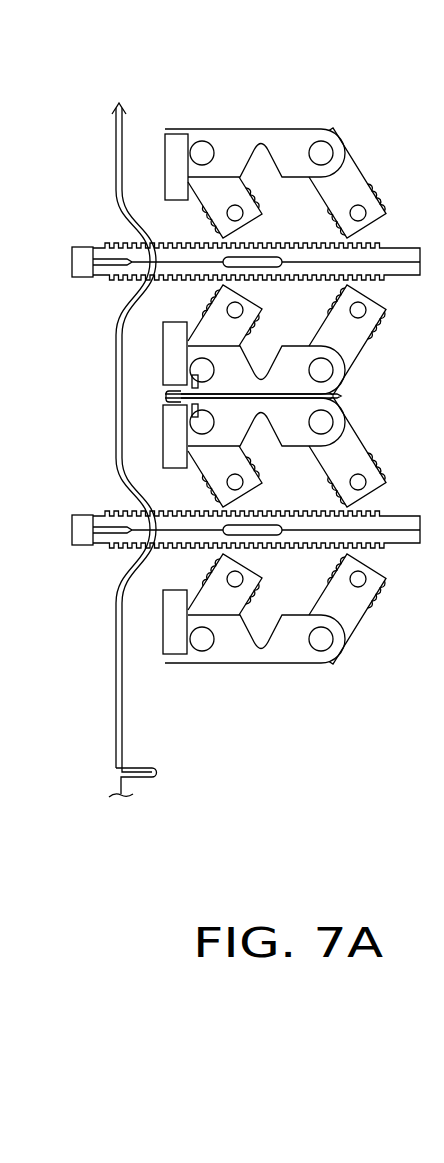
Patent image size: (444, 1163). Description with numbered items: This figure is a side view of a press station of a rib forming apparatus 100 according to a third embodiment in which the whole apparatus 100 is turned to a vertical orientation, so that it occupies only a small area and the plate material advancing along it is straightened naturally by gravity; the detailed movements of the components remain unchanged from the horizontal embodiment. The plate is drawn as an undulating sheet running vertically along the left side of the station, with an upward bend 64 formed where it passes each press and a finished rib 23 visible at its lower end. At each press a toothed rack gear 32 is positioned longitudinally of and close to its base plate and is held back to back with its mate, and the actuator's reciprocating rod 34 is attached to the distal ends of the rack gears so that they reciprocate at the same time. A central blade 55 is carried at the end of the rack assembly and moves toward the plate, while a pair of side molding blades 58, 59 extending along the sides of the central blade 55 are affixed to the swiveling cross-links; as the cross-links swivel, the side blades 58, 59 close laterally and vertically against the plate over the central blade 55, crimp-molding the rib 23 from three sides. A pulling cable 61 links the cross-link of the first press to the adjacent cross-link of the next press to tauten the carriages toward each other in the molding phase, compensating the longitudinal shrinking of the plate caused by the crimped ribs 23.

The rib forming apparatus 100 is at (286, 80).
The ribs 23 is at (158, 774).
The rack gear 32 is at (411, 247).
The reciprocating rod 34 is at (413, 277).
The central blade 55 is at (77, 278).
The side molding blade 58 is at (171, 157).
The side molding blade 59 is at (171, 347).
The pulling cable 61 is at (167, 397).
The upward bend 64 is at (116, 228).